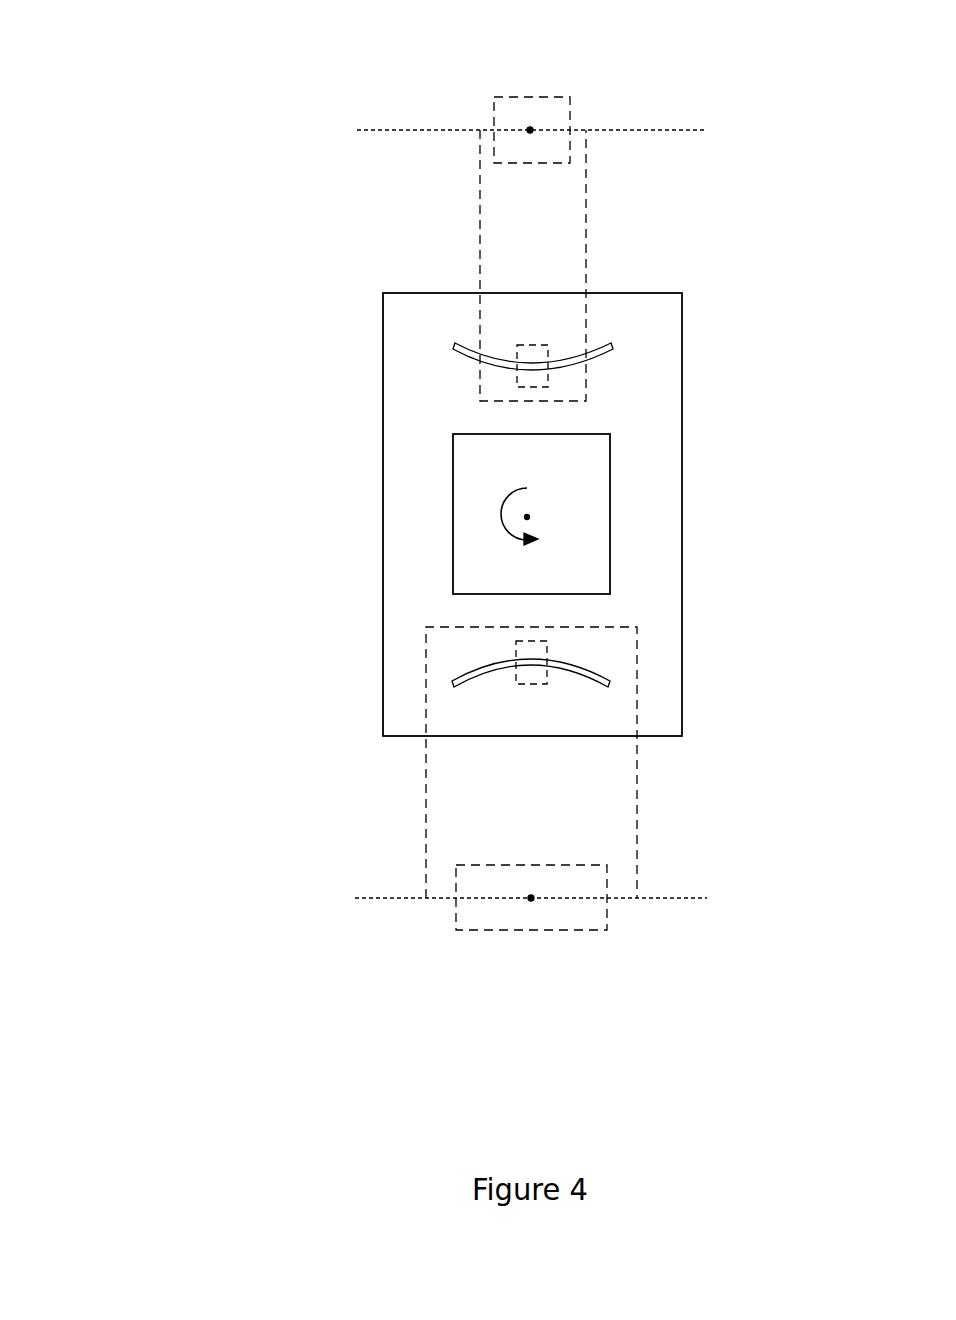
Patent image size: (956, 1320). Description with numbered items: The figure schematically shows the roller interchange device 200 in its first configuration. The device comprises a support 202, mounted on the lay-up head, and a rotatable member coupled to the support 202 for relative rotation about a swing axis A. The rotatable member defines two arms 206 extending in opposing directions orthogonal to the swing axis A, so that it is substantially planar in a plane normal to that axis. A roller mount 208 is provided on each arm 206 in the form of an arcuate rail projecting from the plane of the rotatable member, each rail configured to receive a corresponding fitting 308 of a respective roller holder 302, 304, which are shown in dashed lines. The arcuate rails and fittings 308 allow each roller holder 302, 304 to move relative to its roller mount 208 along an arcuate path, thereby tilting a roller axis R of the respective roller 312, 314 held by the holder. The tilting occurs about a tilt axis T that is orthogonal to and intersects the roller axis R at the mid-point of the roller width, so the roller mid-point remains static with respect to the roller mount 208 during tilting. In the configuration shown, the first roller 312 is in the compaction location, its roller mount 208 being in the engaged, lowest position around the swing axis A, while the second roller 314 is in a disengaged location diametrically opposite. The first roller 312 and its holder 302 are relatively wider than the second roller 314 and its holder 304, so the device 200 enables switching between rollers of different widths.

The roller interchange device 200 is at (121, 63).
The support 202 is at (610, 530).
The arms 206 is at (663, 375).
The roller mount 208 is at (603, 343).
The first roller holder 302 is at (425, 773).
The second roller holder 304 is at (588, 208).
The fitting 308 is at (531, 340).
The first roller 312 is at (572, 918).
The second roller 314 is at (537, 108).
The swing axis A is at (517, 515).
The roller axis R is at (680, 128).
The tilt axis T is at (527, 122).